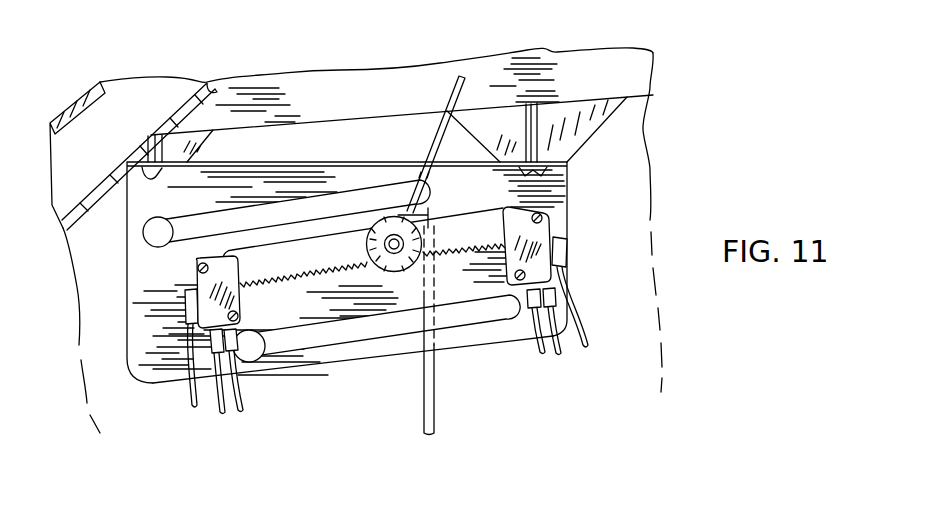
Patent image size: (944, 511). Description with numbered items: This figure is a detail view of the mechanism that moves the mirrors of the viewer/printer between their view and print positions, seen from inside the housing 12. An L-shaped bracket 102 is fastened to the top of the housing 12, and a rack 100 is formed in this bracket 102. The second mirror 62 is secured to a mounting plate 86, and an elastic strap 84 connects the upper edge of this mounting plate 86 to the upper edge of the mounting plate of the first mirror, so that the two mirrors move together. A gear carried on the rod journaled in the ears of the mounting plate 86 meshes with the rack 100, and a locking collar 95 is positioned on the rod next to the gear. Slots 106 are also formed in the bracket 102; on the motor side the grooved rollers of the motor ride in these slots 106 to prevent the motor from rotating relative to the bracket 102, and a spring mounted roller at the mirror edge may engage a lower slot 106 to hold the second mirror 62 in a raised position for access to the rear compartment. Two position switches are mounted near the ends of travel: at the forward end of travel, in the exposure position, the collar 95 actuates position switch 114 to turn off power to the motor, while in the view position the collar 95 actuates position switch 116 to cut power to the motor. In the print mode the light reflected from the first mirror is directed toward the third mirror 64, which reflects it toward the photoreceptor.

The housing 12 is at (90, 89).
The third mirror 64 is at (213, 82).
The elastic strap 84 is at (452, 98).
The slots 106 is at (355, 200).
The rack 100 is at (316, 268).
The locking collar 95 is at (402, 273).
The position switch 116 is at (194, 277).
The position switch 114 is at (566, 217).
The L-shaped bracket 102 is at (340, 367).
The mounting plate 86 is at (423, 382).
The second mirror 62 is at (436, 386).